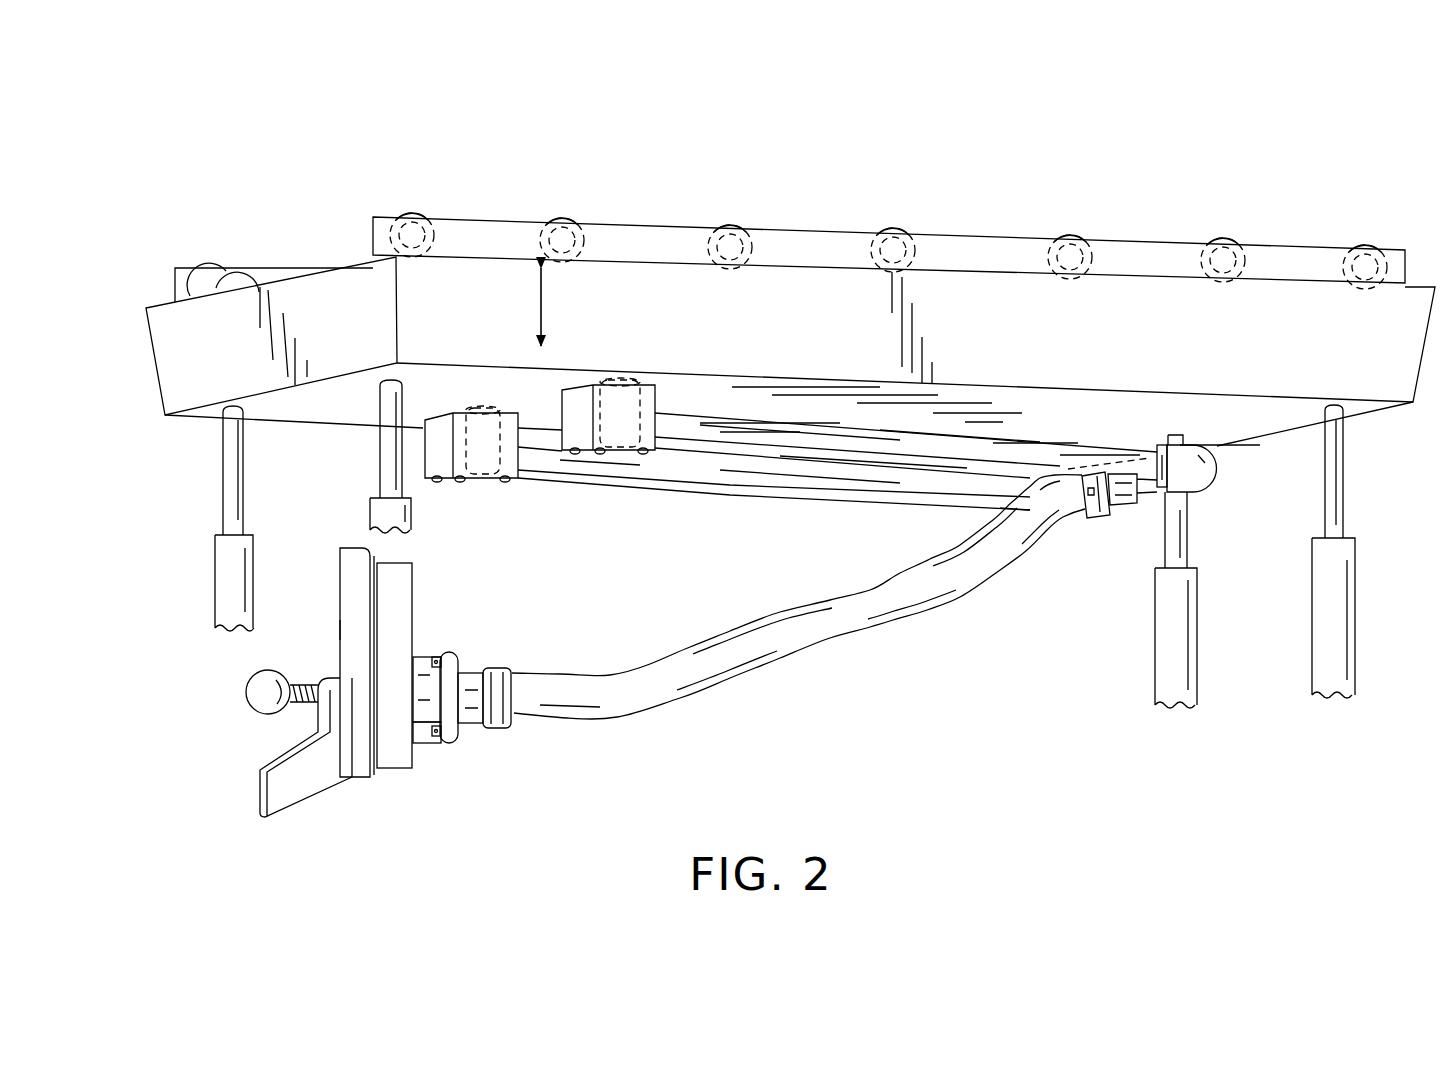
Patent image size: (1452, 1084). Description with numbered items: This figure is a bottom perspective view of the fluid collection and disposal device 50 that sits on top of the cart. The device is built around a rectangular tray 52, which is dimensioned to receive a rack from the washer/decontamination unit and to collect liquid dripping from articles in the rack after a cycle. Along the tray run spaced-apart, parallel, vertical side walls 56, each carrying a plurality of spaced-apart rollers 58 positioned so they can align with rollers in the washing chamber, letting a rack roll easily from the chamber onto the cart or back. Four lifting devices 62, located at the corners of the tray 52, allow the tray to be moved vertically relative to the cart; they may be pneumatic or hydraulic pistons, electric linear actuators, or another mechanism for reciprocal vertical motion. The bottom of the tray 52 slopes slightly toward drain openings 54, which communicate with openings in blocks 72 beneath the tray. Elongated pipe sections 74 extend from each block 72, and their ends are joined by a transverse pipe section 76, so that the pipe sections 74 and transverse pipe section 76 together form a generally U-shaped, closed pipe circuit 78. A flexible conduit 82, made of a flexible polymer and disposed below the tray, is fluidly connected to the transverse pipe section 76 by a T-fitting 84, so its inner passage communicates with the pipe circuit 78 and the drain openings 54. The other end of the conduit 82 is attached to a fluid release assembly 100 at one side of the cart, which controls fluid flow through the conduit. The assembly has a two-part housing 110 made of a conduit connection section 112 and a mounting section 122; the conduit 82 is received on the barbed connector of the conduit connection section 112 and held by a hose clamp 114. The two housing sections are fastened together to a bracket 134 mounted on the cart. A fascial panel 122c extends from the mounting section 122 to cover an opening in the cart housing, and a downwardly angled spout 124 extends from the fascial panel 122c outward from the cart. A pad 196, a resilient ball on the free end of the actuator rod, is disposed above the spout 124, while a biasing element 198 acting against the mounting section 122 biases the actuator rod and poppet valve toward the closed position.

The fluid collection and disposal device 50 is at (797, 195).
The tray 52 is at (970, 303).
The drain openings 54 is at (477, 407).
The side walls 56 is at (278, 272).
The rollers 58 is at (235, 270).
The lifting devices 62 is at (378, 482).
The blocks 72 is at (463, 467).
The pipe sections 74 is at (768, 437).
The transverse pipe section 76 is at (1152, 500).
The pipe circuit 78 is at (962, 512).
The flexible conduit 82 is at (793, 640).
The T-fitting 84 is at (1118, 500).
The fluid release assembly 100 is at (357, 790).
The housing 110 is at (440, 637).
The conduit connection section 112 is at (477, 732).
The hose clamp 114 is at (507, 688).
The mounting section 122 is at (345, 605).
The fascial panel 122c is at (347, 627).
The spout 124 is at (260, 793).
The bracket 134 is at (417, 662).
The pad 196 is at (262, 700).
The biasing element 198 is at (290, 690).